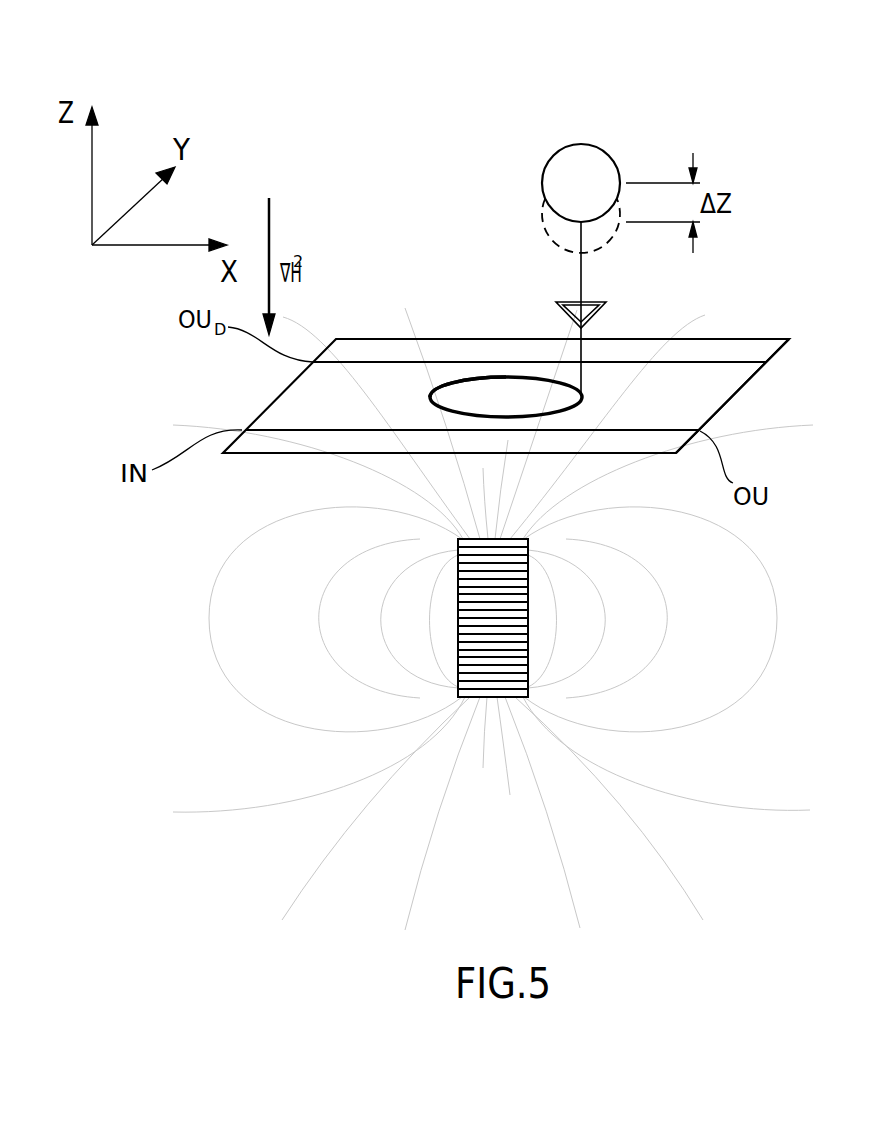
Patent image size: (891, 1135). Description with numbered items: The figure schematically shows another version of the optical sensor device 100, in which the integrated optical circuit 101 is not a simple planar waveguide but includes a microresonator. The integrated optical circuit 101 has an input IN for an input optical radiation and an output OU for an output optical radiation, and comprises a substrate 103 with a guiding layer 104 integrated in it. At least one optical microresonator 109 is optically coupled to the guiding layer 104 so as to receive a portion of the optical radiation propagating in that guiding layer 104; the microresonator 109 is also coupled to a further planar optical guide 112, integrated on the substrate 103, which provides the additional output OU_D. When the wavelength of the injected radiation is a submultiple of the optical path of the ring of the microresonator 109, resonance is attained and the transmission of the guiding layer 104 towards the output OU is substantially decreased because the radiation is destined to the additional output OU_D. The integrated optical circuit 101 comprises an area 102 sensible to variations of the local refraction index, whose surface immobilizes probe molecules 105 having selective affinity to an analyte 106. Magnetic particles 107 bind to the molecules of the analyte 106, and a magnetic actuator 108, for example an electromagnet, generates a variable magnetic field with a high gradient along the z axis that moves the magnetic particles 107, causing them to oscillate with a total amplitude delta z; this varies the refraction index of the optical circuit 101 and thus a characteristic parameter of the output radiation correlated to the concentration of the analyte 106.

The optical sensor device 100 is at (815, 149).
The integrated optical circuit 101 is at (767, 389).
The area 102 is at (430, 398).
The substrate 103 is at (776, 352).
The guiding layer 104 is at (660, 430).
The probe molecules 105 is at (598, 312).
The analyte 106 is at (580, 280).
The magnetic particles 107 is at (547, 160).
The magnetic actuator 108 is at (528, 624).
The optical microresonator 109 is at (474, 378).
The further planar optical guide 112 is at (724, 362).